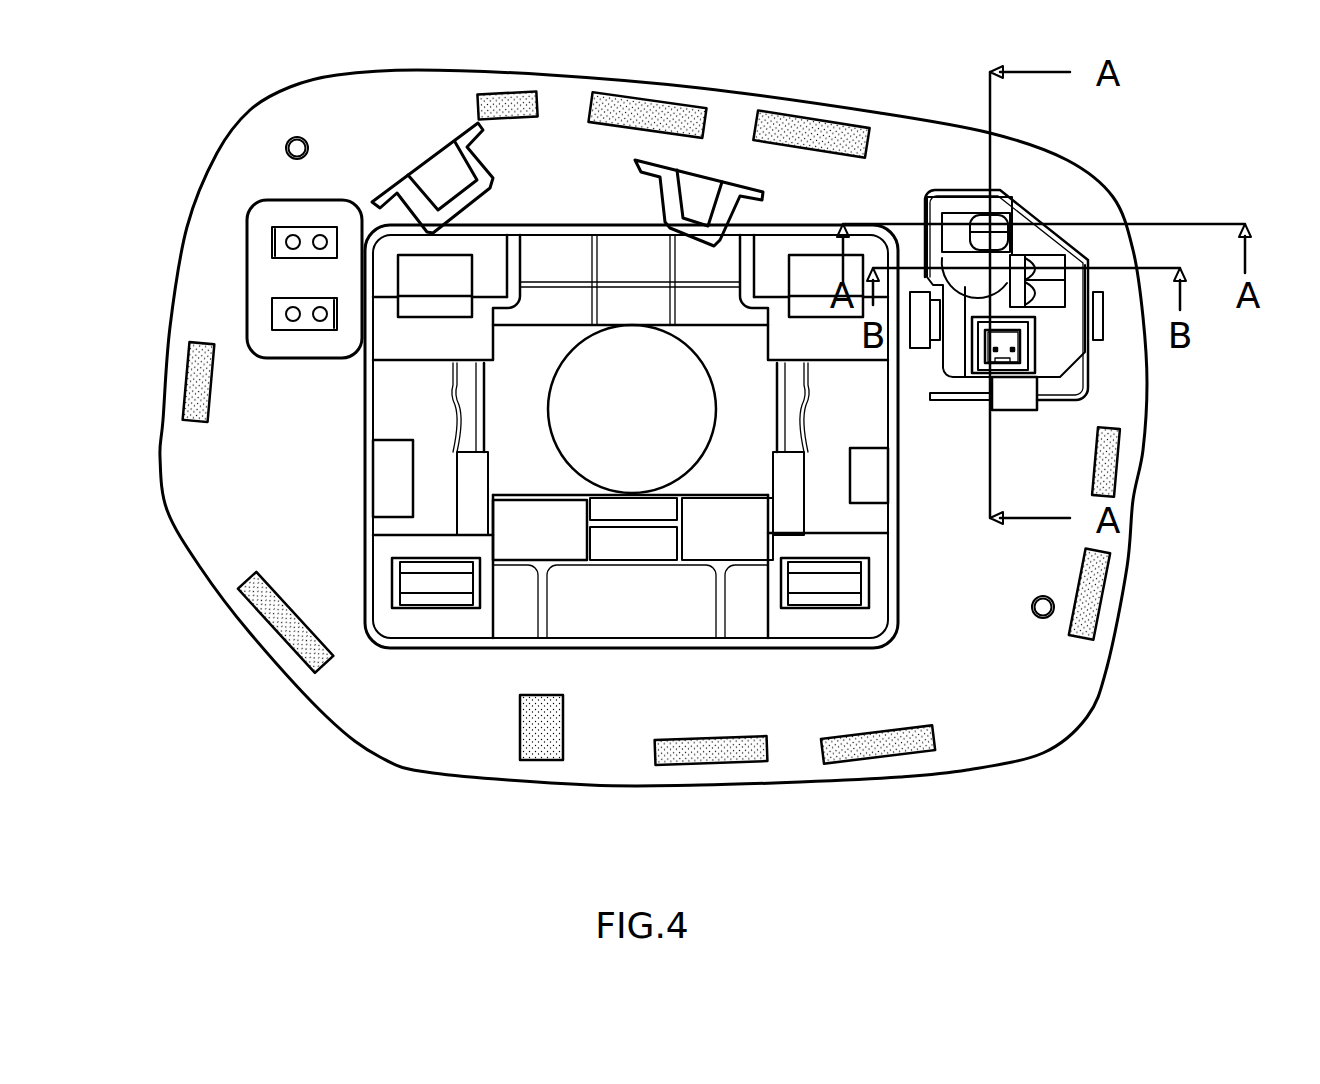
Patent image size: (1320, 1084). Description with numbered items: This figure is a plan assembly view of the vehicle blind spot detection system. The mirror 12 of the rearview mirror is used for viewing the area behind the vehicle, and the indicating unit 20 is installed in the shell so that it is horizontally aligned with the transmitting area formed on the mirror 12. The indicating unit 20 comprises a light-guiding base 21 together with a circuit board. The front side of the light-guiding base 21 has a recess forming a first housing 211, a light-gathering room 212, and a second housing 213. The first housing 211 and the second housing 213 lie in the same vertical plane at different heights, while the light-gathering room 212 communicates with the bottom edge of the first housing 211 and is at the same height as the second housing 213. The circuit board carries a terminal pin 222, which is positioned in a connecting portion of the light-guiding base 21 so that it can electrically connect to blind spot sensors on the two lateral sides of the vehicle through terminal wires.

The mirror 12 is at (257, 640).
The indicating unit 20 is at (1027, 208).
The light-guiding base 21 is at (1073, 345).
The first housing 211 is at (978, 220).
The light-gathering room 212 is at (957, 263).
The second housing 213 is at (1063, 258).
The terminal pin 222 is at (1013, 350).